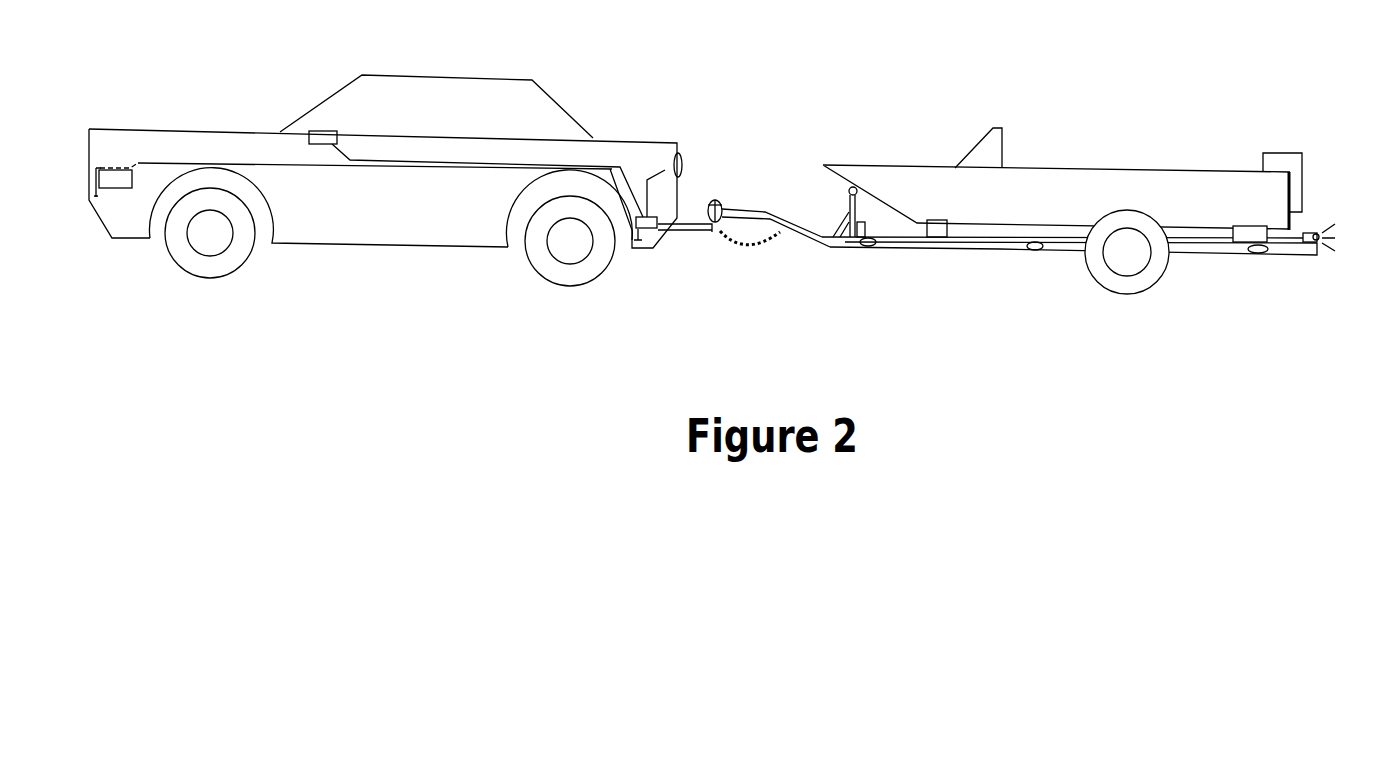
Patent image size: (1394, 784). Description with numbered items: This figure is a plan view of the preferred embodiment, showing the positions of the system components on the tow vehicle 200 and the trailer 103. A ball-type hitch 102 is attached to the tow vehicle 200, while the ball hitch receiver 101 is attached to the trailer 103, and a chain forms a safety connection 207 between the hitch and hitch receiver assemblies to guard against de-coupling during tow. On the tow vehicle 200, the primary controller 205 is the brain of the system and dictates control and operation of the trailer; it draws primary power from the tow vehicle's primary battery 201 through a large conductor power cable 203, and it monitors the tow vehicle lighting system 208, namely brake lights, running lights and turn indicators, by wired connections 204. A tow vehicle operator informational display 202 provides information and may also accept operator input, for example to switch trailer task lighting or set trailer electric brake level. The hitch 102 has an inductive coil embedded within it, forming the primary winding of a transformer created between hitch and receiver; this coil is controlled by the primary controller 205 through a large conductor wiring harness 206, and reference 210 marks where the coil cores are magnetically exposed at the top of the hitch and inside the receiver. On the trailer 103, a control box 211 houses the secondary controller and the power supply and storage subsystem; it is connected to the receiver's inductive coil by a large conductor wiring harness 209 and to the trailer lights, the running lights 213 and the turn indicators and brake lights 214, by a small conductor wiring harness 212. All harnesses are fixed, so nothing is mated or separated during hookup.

The tow vehicle 200 is at (123, 128).
The primary battery 201 is at (113, 190).
The tow vehicle operator informational display 202 is at (325, 130).
The power cable 203 is at (323, 166).
The wired connections 204 is at (665, 170).
The primary controller 205 is at (644, 240).
The large conductor wiring harness 206 is at (700, 231).
The safety connection 207 is at (751, 243).
The tow vehicle lighting system 208 is at (682, 153).
The ball hitch receiver 101 is at (719, 203).
The ball-type hitch 102 is at (707, 210).
The magnetically exposed coil cores 210 is at (723, 208).
The large conductor wiring harness 209 is at (805, 232).
The trailer 103 is at (851, 251).
The control box 211 is at (873, 233).
The small conductor wiring harness 212 is at (962, 243).
The running lights 213 is at (1250, 253).
The turn indicators and brake lights 214 is at (1314, 233).